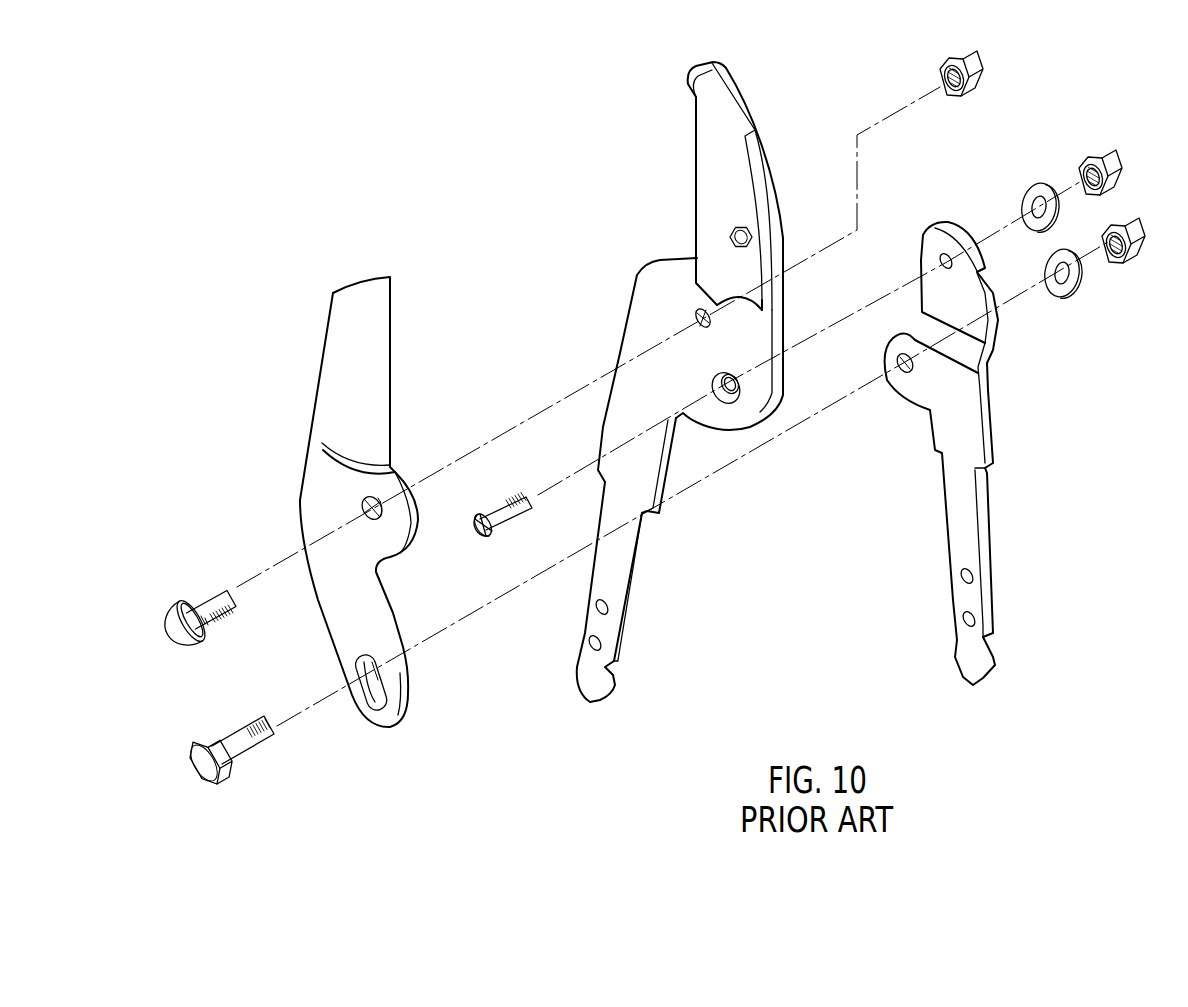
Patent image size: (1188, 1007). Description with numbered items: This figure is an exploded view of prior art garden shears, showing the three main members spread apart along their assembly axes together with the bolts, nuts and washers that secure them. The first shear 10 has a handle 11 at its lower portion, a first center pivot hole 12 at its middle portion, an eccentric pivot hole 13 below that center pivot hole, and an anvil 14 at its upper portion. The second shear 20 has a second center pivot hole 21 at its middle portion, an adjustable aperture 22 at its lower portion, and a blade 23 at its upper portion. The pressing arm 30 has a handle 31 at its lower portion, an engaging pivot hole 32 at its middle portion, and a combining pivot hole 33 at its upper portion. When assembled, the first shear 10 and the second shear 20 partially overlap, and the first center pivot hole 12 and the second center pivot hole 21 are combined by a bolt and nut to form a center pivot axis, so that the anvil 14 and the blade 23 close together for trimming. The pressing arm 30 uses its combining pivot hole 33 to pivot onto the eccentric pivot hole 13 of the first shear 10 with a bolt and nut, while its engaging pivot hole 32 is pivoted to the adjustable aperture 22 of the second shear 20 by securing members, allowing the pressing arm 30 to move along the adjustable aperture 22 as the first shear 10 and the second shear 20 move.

The first shear 10 is at (618, 350).
The handle 11 is at (617, 570).
The first center pivot hole 12 is at (698, 312).
The eccentric pivot hole 13 is at (732, 377).
The anvil 14 is at (696, 178).
The second shear 20 is at (291, 515).
The second center pivot hole 21 is at (366, 500).
The adjustable aperture 22 is at (377, 687).
The blade 23 is at (391, 378).
The pressing arm 30 is at (998, 422).
The handle 31 is at (980, 600).
The engaging pivot hole 32 is at (912, 375).
The combining pivot hole 33 is at (947, 255).